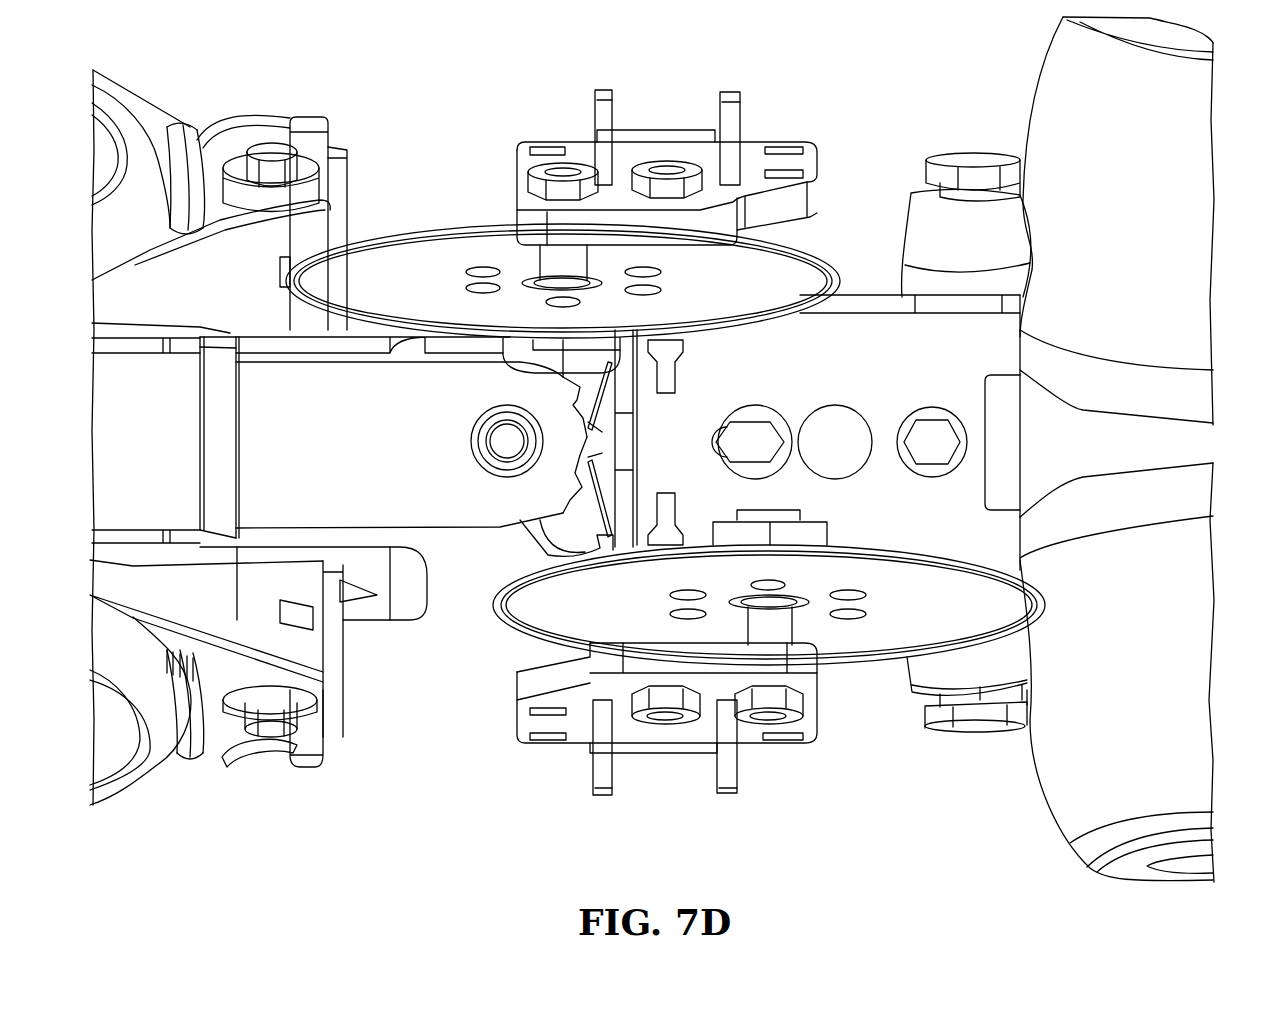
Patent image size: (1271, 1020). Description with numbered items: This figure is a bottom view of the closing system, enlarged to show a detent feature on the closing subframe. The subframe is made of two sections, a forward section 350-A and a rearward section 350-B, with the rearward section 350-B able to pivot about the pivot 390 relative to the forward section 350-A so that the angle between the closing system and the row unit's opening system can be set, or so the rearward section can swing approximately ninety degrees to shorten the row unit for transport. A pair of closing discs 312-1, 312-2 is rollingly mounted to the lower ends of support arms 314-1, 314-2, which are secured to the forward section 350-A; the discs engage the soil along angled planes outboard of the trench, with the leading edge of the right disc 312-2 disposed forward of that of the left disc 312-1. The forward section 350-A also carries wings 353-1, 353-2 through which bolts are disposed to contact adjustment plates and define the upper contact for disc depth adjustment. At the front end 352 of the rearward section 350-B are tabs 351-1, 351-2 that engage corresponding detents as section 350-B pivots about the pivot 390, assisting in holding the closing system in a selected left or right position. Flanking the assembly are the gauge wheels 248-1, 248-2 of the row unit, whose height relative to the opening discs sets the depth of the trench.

The rearward section of subframe 350-B is at (333, 382).
The right disc 312-2 is at (453, 258).
The support arm 314-2 is at (640, 147).
The forward section of subframe 350-A is at (912, 343).
The gauge wheel 248-1 is at (1055, 107).
The wing 353-2 is at (635, 405).
The front end 352 is at (585, 440).
The tab 351-2 is at (573, 383).
The pivot 390 is at (512, 443).
The tab 351-1 is at (555, 483).
The wing 353-1 is at (603, 490).
The left disc 312-1 is at (577, 593).
The support arm 314-1 is at (657, 738).
The gauge wheel 248-2 is at (1073, 787).